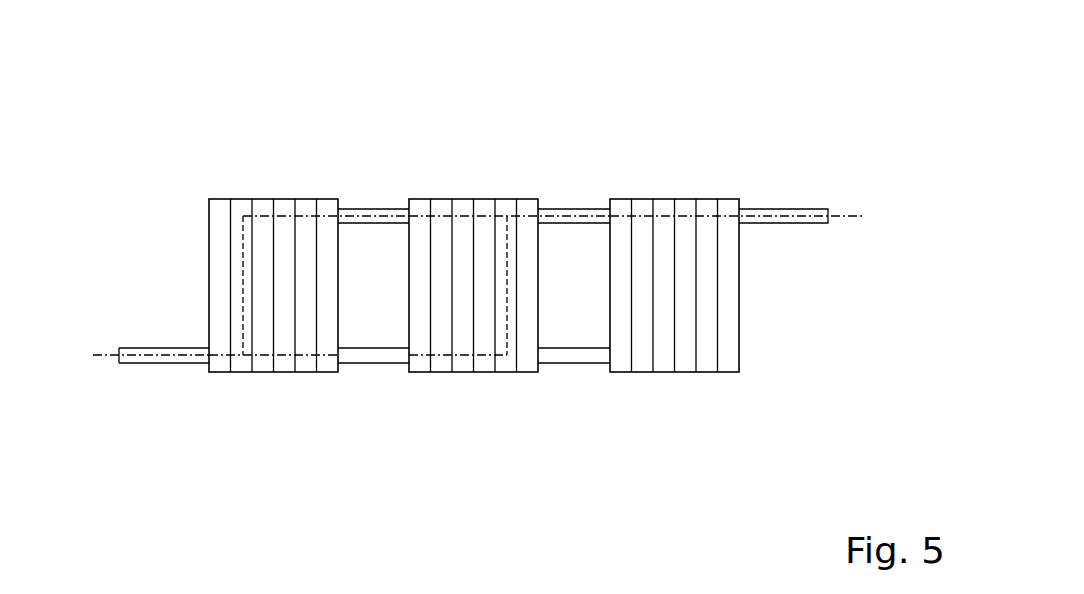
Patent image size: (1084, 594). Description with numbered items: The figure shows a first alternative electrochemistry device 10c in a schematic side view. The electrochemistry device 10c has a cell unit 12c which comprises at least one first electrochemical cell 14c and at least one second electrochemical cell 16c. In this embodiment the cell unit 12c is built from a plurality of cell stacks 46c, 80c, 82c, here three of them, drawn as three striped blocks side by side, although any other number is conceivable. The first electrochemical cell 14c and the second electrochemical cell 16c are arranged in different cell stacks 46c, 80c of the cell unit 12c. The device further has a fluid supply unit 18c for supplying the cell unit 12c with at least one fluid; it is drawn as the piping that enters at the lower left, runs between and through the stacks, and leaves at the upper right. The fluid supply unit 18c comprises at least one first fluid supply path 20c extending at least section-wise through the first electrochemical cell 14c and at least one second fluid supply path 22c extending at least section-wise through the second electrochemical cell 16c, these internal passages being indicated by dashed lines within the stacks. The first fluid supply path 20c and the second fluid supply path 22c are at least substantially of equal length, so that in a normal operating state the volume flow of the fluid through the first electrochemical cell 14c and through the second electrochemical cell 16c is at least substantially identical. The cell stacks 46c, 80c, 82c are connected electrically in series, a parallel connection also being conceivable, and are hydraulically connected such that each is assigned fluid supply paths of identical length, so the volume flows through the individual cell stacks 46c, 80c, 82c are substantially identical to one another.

The first alternative electrochemistry device 10c is at (461, 263).
The cell unit 12c is at (276, 174).
The first electrochemical cell 14c is at (243, 372).
The second electrochemical cell 16c is at (508, 372).
The fluid supply unit 18c is at (150, 248).
The first fluid supply path 20c is at (242, 296).
The second fluid supply path 22c is at (507, 258).
The cell stack 46c is at (306, 386).
The cell stack 80c is at (441, 387).
The cell stack 82c is at (674, 386).